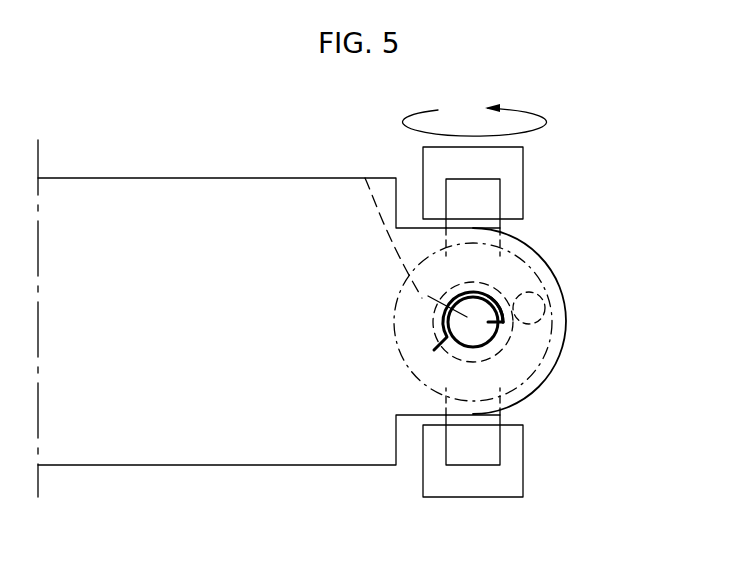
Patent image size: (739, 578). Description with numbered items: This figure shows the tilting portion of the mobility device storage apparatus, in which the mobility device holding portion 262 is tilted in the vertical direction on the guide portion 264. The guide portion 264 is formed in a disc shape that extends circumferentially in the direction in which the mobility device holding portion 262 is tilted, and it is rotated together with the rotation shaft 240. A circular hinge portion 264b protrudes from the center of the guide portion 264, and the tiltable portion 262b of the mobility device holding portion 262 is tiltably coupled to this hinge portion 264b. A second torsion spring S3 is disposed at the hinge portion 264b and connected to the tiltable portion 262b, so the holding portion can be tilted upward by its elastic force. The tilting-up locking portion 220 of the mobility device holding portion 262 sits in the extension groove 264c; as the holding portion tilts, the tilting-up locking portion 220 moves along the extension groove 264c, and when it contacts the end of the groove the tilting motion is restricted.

The mobility device holding portion 262 is at (233, 448).
The tiltable portion 262b is at (538, 382).
The rotation shaft 240 is at (488, 203).
The guide portion 264 is at (433, 350).
The hinge portion 264b is at (365, 178).
The extension groove 264c is at (548, 345).
The tilting-up locking portion 220 is at (545, 308).
The second torsion spring S3 is at (485, 293).